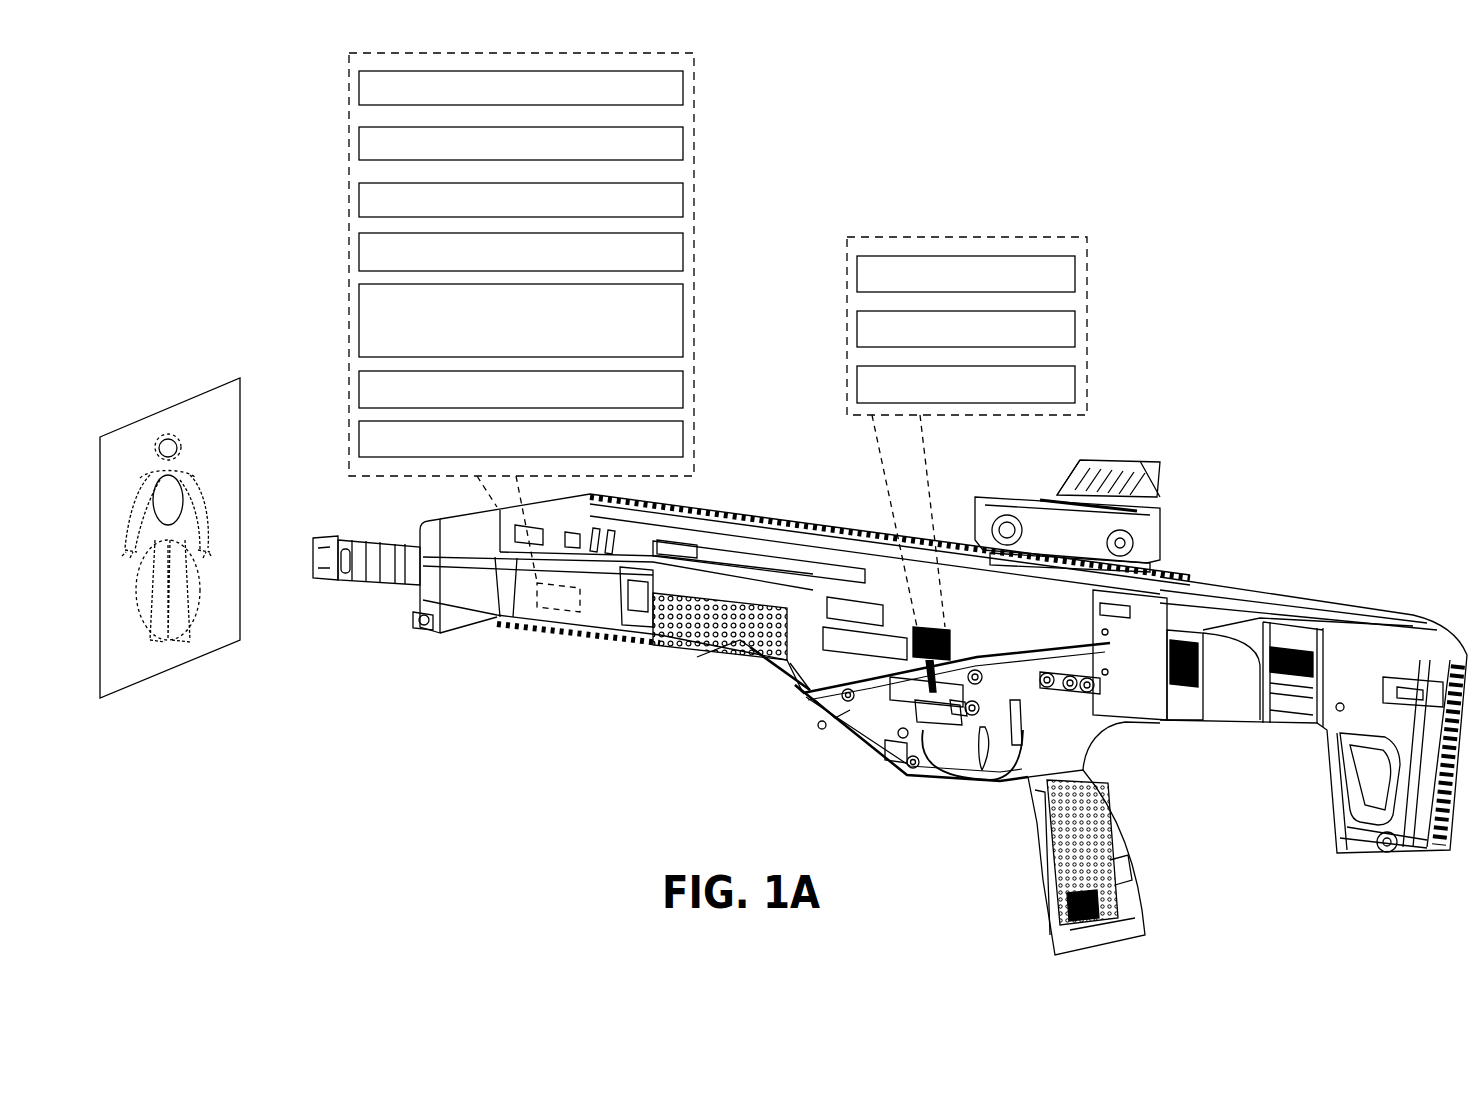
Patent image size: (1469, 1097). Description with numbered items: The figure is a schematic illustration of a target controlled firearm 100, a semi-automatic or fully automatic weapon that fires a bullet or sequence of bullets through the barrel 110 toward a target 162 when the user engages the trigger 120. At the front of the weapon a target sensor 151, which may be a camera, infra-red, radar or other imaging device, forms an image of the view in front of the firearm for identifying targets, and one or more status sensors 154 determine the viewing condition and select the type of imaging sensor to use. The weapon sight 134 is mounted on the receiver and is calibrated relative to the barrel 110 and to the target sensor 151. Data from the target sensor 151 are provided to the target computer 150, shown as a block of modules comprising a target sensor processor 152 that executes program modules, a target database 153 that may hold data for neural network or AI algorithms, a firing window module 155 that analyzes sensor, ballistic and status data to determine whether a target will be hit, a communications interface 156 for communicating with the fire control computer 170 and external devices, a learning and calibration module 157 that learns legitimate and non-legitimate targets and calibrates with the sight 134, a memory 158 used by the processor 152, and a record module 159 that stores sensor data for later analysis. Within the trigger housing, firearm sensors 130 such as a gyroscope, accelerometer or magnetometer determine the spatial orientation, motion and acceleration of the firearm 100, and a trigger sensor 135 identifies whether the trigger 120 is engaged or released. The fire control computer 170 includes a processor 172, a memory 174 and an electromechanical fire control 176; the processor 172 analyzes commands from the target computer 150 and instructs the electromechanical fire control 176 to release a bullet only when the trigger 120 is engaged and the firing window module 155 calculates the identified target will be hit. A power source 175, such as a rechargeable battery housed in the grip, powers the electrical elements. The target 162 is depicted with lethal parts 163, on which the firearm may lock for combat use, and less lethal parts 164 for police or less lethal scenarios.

The target controlled firearm 100 is at (1268, 466).
The barrel 110 is at (352, 576).
The trigger 120 is at (972, 783).
The firearm sensors 130 is at (887, 767).
The weapon sight 134 is at (1123, 463).
The trigger sensor 135 is at (958, 715).
The target computer 150 is at (349, 170).
The target sensor 151 is at (423, 627).
The target sensor processor 152 is at (683, 88).
The target database 153 is at (683, 145).
The status sensors 154 is at (440, 633).
The firing window module 155 is at (683, 202).
The communications interface 156 is at (683, 254).
The learning and calibration module 157 is at (683, 318).
The memory 158 is at (683, 392).
The record module 159 is at (683, 441).
The target 162 is at (226, 437).
The lethal parts 163 is at (160, 440).
The less lethal parts 164 is at (198, 603).
The fire control computer 170 is at (847, 322).
The processor 172 is at (1075, 272).
The memory 174 is at (1075, 330).
The power source 175 is at (1123, 913).
The electromechanical fire control 176 is at (1075, 387).